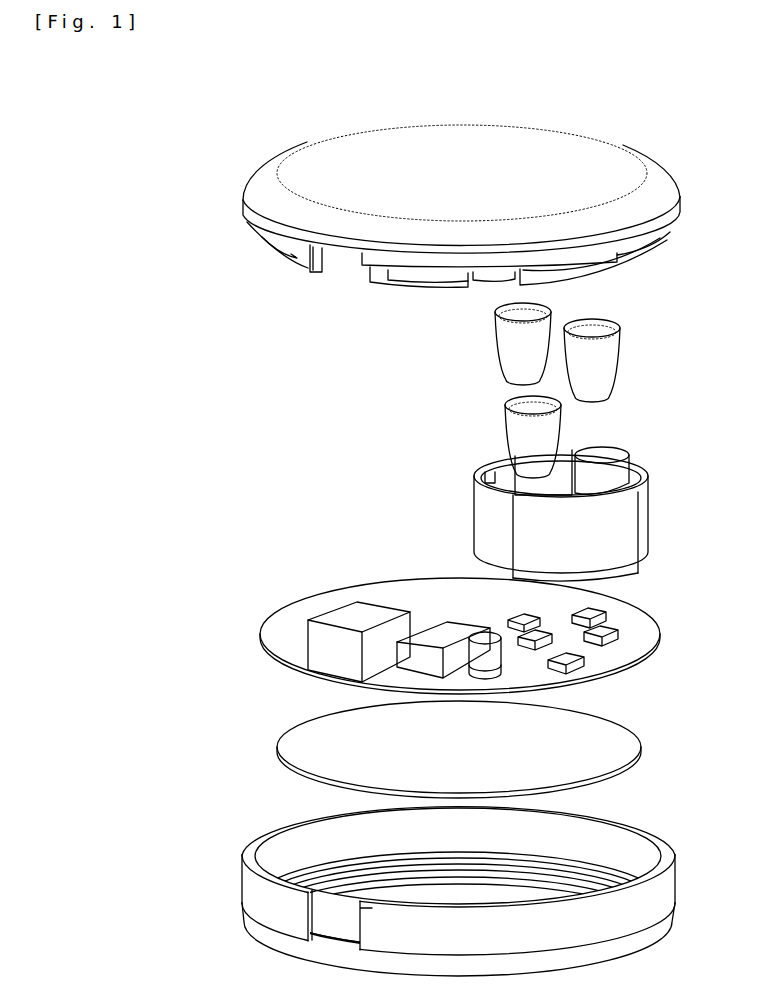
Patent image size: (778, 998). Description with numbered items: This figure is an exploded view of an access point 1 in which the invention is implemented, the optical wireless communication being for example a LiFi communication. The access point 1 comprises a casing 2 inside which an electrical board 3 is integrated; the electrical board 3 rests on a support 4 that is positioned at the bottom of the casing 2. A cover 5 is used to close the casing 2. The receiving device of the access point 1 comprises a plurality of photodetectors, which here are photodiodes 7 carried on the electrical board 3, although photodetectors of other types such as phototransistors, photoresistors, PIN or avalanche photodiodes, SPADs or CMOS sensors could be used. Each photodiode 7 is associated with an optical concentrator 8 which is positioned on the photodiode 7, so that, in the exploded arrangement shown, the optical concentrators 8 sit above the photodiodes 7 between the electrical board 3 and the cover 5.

The access point 1 is at (148, 316).
The casing 2 is at (245, 887).
The electrical board 3 is at (377, 597).
The support 4 is at (597, 740).
The cover 5 is at (541, 148).
The photodiodes 7 is at (602, 632).
The optical concentrator 8 is at (552, 422).